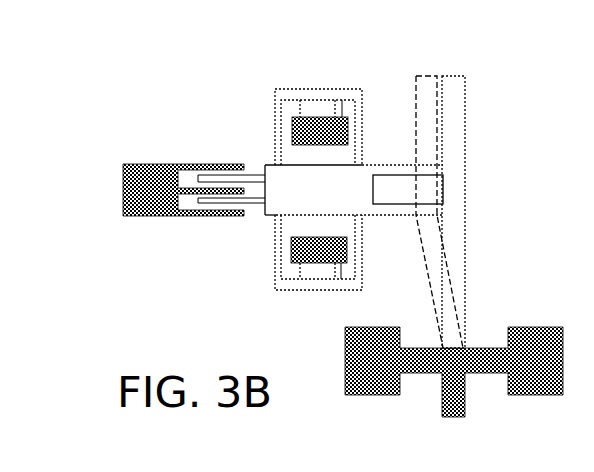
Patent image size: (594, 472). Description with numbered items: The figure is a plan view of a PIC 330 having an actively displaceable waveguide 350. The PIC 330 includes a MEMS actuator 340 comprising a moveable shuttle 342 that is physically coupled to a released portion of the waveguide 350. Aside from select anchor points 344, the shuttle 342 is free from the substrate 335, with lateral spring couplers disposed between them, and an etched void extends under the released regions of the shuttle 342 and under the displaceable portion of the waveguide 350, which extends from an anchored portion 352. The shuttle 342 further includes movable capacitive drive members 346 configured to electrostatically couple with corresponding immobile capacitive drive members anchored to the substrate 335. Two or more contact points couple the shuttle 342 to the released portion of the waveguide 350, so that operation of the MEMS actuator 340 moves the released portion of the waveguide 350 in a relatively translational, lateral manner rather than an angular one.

The PIC 330 is at (135, 81).
The substrate 335 is at (535, 283).
The MEMS actuator 340 is at (405, 292).
The moveable shuttle 342 is at (405, 219).
The anchor points 344 is at (303, 141).
The movable capacitive drive members 346 is at (242, 152).
The waveguide 350 is at (472, 108).
The anchored portion 352 is at (390, 371).